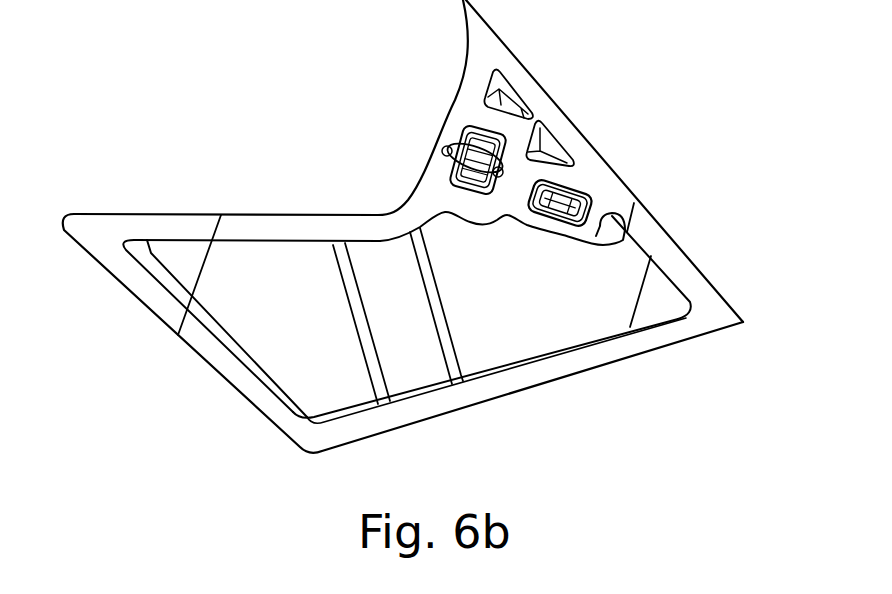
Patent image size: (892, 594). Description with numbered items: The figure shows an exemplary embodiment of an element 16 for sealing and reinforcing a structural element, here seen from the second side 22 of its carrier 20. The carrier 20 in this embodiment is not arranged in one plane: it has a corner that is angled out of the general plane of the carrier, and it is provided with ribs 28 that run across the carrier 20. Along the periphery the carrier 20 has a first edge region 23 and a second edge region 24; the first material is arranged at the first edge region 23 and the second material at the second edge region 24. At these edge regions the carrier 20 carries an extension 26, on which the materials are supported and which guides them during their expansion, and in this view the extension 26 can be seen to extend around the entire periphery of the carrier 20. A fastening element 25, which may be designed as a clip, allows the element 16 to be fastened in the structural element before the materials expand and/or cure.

The element 16 is at (236, 102).
The carrier 20 is at (261, 267).
The second side 22 is at (549, 323).
The first edge region 23 is at (157, 213).
The second edge region 24 is at (598, 145).
The fastening element 25 is at (482, 140).
The extension 26 is at (490, 50).
The ribs 28 is at (348, 260).